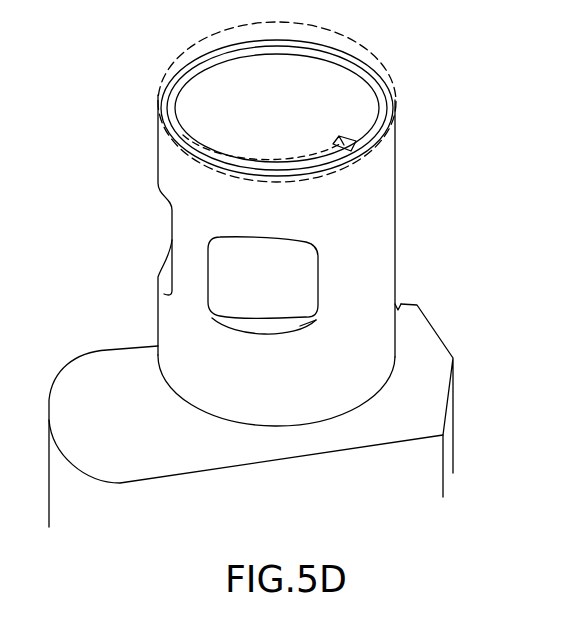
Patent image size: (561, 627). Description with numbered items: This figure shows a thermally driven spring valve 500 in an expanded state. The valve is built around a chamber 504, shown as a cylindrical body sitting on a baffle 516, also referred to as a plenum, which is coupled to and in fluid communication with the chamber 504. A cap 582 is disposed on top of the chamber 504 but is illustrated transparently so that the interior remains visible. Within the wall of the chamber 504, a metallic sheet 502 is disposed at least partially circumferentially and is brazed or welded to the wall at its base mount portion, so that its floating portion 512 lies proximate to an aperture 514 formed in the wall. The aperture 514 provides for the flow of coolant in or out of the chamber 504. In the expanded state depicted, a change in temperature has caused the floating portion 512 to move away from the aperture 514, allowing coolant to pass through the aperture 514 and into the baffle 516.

The thermally driven spring valve 500 is at (362, 79).
The cap 582 is at (160, 87).
The chamber 504 is at (356, 204).
The metallic sheet 502 is at (277, 276).
The floating portion 512 is at (267, 297).
The aperture 514 is at (310, 330).
The baffle 516 is at (123, 424).